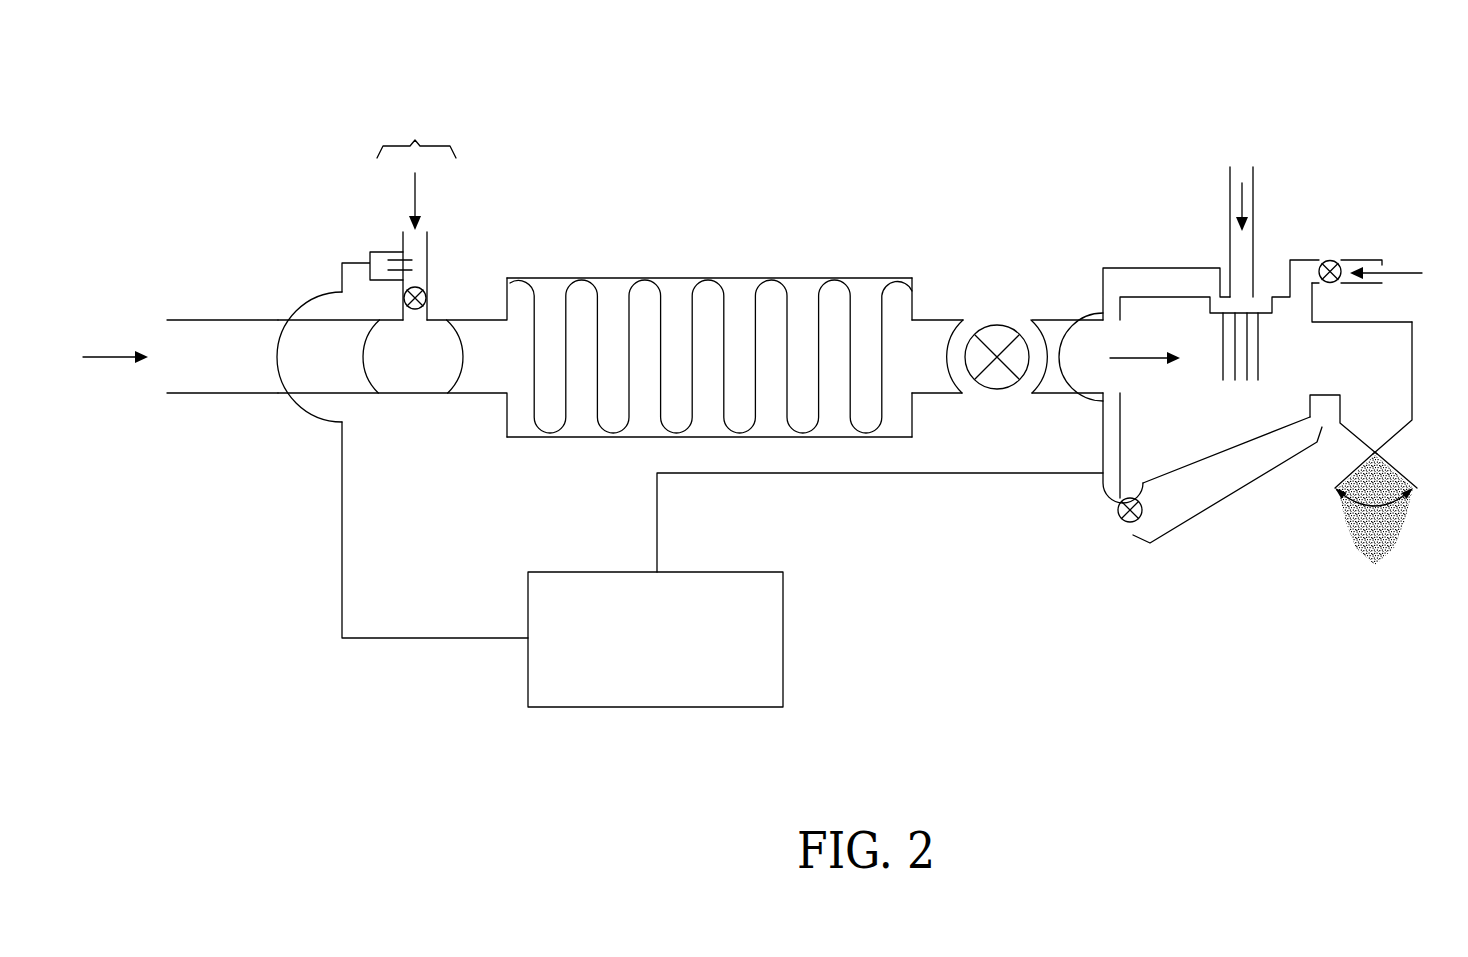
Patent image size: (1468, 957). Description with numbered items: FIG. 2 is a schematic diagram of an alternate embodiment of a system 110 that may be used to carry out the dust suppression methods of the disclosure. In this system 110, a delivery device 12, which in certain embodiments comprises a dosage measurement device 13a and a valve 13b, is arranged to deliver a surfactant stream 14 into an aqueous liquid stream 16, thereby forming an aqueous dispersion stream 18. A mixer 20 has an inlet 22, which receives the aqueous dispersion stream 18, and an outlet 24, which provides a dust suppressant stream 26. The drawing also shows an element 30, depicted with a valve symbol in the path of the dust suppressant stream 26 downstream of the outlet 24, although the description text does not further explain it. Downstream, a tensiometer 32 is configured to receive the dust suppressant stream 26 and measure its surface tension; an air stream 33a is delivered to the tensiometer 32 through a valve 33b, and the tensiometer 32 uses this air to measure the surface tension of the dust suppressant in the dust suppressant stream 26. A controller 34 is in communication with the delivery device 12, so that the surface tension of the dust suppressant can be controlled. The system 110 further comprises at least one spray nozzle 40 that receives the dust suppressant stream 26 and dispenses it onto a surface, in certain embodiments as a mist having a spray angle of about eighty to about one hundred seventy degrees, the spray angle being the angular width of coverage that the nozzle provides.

The delivery device 12 is at (415, 141).
The dosage measurement device 13a is at (380, 250).
The valve 13b is at (427, 298).
The surfactant stream 14 is at (418, 237).
The aqueous liquid stream 16 is at (163, 370).
The aqueous dispersion stream 18 is at (480, 357).
The mixer 20 is at (797, 278).
The inlet 22 is at (510, 363).
The outlet 24 is at (912, 353).
The dust suppressant stream 26 is at (940, 357).
The control valve 30 is at (1005, 340).
The tensiometer 32 is at (1217, 503).
The air stream 33a is at (1392, 272).
The valve 33b is at (1330, 261).
The controller 34 is at (675, 707).
The spray nozzle 40 is at (1368, 452).
The system 110 is at (1147, 145).